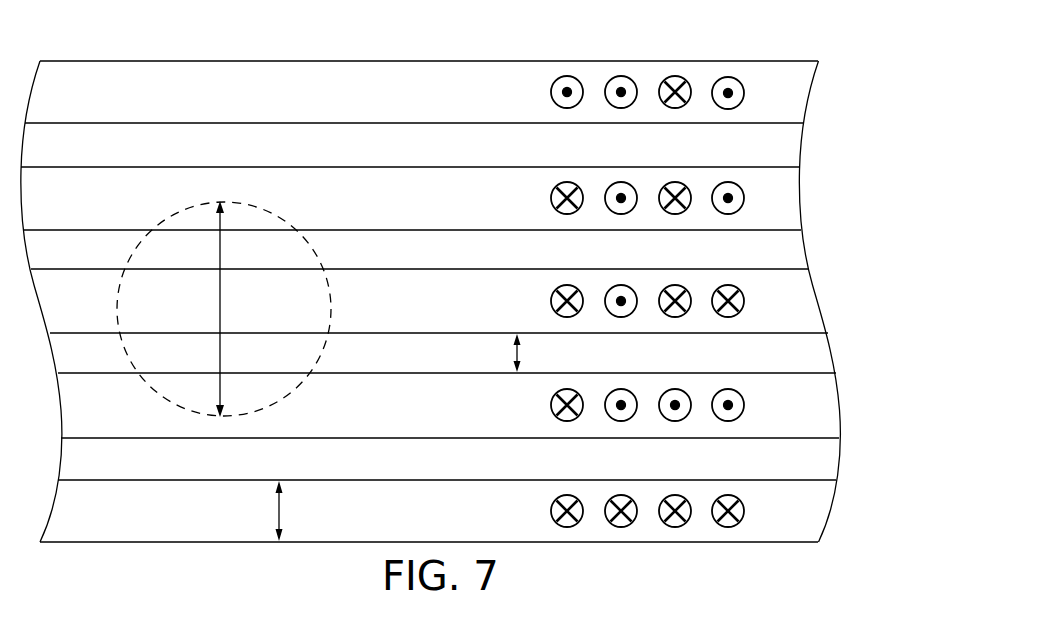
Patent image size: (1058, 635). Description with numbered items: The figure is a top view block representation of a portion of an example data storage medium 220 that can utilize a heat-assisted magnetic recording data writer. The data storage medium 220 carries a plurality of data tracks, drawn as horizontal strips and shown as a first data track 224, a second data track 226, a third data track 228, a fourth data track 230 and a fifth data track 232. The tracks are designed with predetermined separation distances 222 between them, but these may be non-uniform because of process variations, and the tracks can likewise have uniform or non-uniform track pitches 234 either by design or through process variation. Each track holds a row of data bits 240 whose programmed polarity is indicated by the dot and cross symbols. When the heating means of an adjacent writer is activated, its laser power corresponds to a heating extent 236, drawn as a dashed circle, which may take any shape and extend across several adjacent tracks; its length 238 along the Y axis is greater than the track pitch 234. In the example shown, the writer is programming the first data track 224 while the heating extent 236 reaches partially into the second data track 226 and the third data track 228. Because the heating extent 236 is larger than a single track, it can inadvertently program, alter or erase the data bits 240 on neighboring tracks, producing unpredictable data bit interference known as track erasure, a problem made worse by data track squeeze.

The data storage medium 220 is at (765, 55).
The separation distance 222 is at (496, 353).
The first data track 224 is at (429, 301).
The second data track 226 is at (411, 198).
The third data track 228 is at (447, 405).
The fourth data track 230 is at (421, 92).
The fifth data track 232 is at (438, 511).
The track pitch 234 is at (260, 511).
The heating extent 236 is at (267, 208).
The length 238 is at (203, 309).
The data bits 240 is at (741, 86).